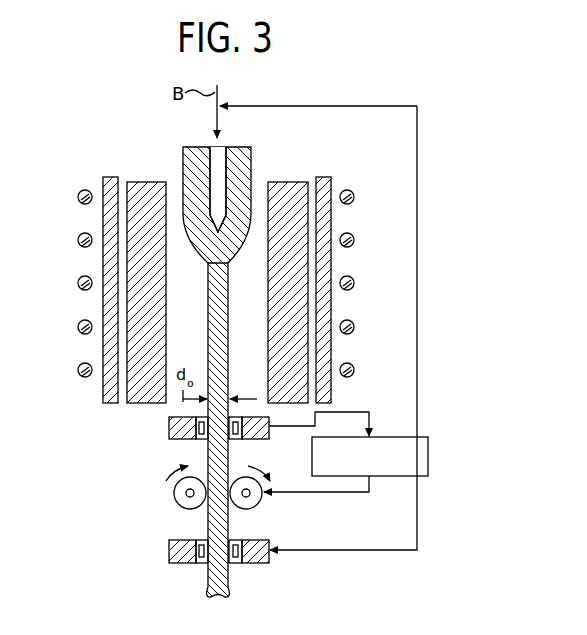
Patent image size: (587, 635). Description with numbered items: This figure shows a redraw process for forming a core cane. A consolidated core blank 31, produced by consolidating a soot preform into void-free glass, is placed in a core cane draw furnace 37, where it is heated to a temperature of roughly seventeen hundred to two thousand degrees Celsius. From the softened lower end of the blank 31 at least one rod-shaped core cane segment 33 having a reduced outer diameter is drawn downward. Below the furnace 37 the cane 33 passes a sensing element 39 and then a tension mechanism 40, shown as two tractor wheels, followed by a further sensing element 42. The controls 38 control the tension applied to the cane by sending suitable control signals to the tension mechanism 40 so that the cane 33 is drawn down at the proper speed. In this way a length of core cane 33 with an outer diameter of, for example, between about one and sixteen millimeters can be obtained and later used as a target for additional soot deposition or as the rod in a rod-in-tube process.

The consolidated core blank 31 is at (254, 153).
The core cane segment 33 is at (232, 574).
The core cane draw furnace 37 is at (134, 170).
The controls 38 is at (399, 437).
The diameter sensor 39 is at (168, 430).
The tension mechanism 40 is at (165, 497).
The second sensor 42 is at (257, 540).